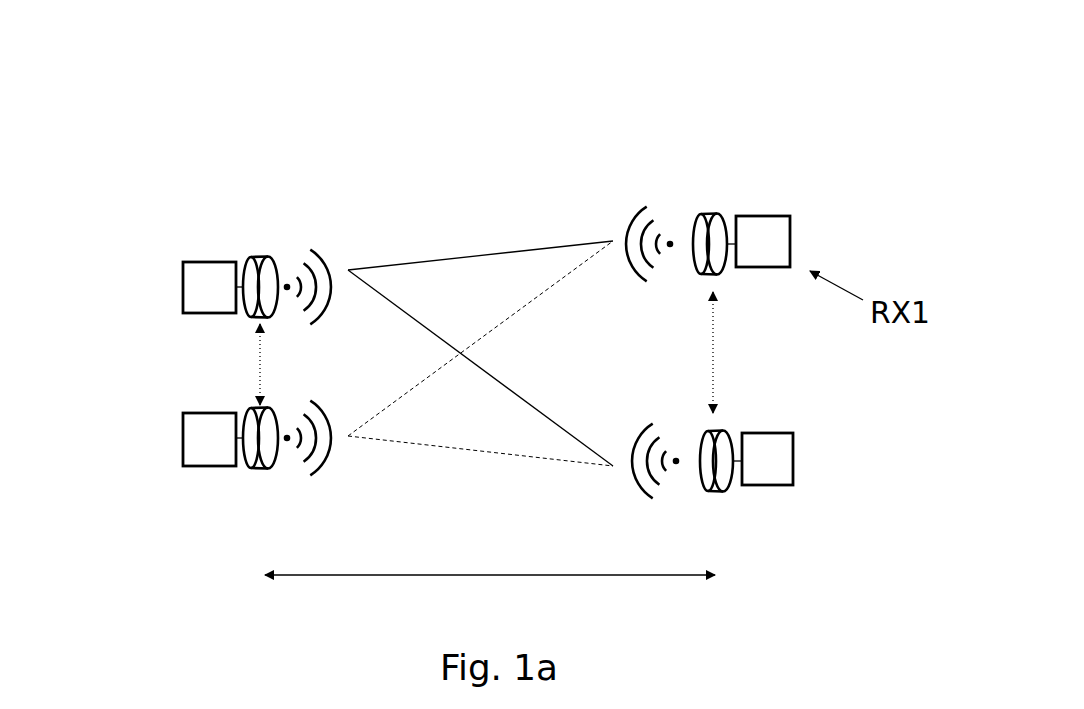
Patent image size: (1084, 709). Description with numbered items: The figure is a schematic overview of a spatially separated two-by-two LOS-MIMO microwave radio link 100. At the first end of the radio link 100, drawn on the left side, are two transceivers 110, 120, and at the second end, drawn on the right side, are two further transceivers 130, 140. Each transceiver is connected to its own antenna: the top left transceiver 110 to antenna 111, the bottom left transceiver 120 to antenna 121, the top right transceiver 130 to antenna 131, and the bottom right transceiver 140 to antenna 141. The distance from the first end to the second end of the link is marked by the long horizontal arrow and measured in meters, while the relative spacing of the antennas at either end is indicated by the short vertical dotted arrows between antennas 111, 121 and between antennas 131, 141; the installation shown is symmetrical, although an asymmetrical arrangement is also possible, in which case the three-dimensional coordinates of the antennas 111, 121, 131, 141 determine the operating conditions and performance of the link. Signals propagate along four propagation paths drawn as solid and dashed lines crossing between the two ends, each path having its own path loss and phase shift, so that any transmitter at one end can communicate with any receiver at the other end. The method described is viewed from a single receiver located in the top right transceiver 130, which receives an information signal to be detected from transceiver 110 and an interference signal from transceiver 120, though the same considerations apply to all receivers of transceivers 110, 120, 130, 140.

The LOS-MIMO microwave radio link 100 is at (843, 67).
The transceiver 110 is at (168, 259).
The antenna 111 is at (258, 248).
The transceiver 120 is at (165, 469).
The antenna 121 is at (259, 482).
The transceiver 130 is at (800, 209).
The antenna 131 is at (718, 193).
The transceiver 140 is at (805, 494).
The antenna 141 is at (717, 495).